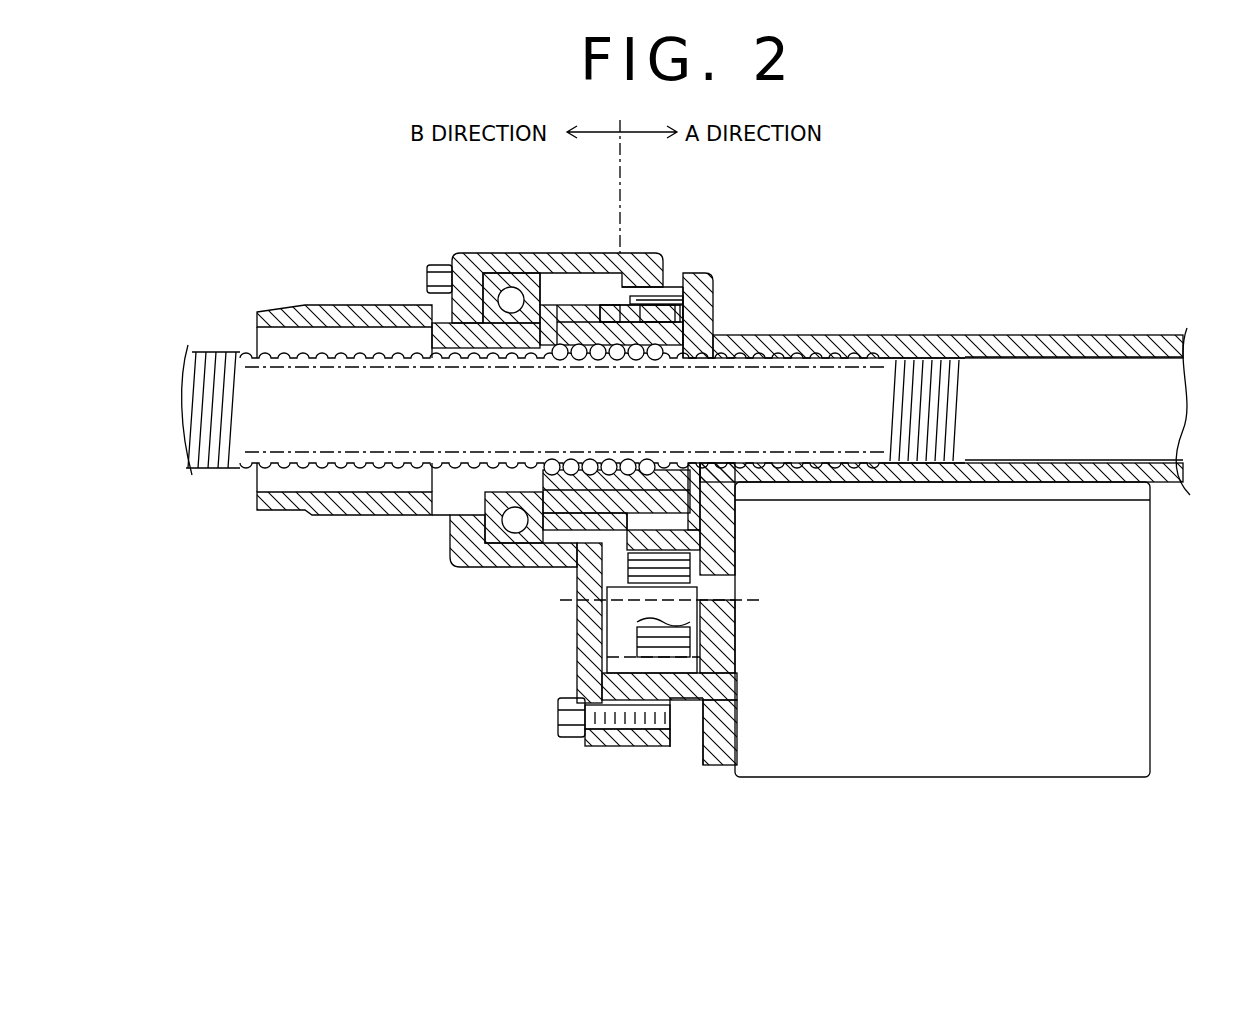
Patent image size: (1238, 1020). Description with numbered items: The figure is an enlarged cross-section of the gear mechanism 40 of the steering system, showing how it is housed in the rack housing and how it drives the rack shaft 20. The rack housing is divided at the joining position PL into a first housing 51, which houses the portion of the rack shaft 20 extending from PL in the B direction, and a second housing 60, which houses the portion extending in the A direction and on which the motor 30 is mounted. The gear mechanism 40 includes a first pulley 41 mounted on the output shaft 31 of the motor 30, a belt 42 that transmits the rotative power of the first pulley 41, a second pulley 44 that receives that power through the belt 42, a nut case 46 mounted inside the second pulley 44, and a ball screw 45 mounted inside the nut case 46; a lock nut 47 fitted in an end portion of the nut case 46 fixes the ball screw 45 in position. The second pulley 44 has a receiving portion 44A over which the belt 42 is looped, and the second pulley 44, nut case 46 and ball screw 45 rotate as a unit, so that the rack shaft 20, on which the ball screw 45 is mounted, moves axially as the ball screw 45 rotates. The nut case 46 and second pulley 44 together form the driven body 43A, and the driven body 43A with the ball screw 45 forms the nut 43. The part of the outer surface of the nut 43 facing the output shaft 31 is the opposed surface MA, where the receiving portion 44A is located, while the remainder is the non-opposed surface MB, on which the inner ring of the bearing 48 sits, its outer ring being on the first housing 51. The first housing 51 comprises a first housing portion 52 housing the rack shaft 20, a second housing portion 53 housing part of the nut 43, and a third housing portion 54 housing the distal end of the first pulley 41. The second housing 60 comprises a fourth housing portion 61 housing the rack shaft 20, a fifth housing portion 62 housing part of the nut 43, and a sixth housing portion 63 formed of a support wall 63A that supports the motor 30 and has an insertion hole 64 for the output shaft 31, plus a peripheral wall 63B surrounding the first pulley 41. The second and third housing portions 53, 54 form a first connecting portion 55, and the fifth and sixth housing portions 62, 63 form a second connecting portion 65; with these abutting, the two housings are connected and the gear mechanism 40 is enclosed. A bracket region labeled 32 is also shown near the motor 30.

The rack shaft 20 is at (1122, 372).
The motor 30 is at (945, 778).
The output shaft 31 is at (680, 620).
The motor bracket 32 is at (728, 543).
The gear mechanism 40 is at (556, 300).
The first pulley 41 is at (610, 593).
The belt 42 is at (643, 660).
The nut 43 is at (665, 423).
The driven body 43A is at (672, 393).
The second pulley 44 is at (658, 325).
The receiving portion 44A is at (683, 300).
The ball screw 45 is at (570, 352).
The nut case 46 is at (607, 317).
The lock nut 47 is at (684, 342).
The bearing 48 is at (493, 264).
The first housing 51 is at (273, 312).
The first housing portion 52 is at (330, 517).
The second housing portion 53 is at (497, 568).
The third housing portion 54 is at (577, 638).
The first connecting portion 55 is at (600, 747).
The second housing 60 is at (1018, 340).
The fourth housing portion 61 is at (933, 345).
The fifth housing portion 62 is at (716, 320).
The sixth housing portion 63 is at (765, 822).
The support wall 63A is at (717, 766).
The peripheral wall 63B is at (688, 705).
The insertion hole 64 is at (727, 672).
The second connecting portion 65 is at (645, 747).
The opposed surface MA is at (620, 515).
The non-opposed surface MB is at (450, 522).
The position PL is at (620, 160).